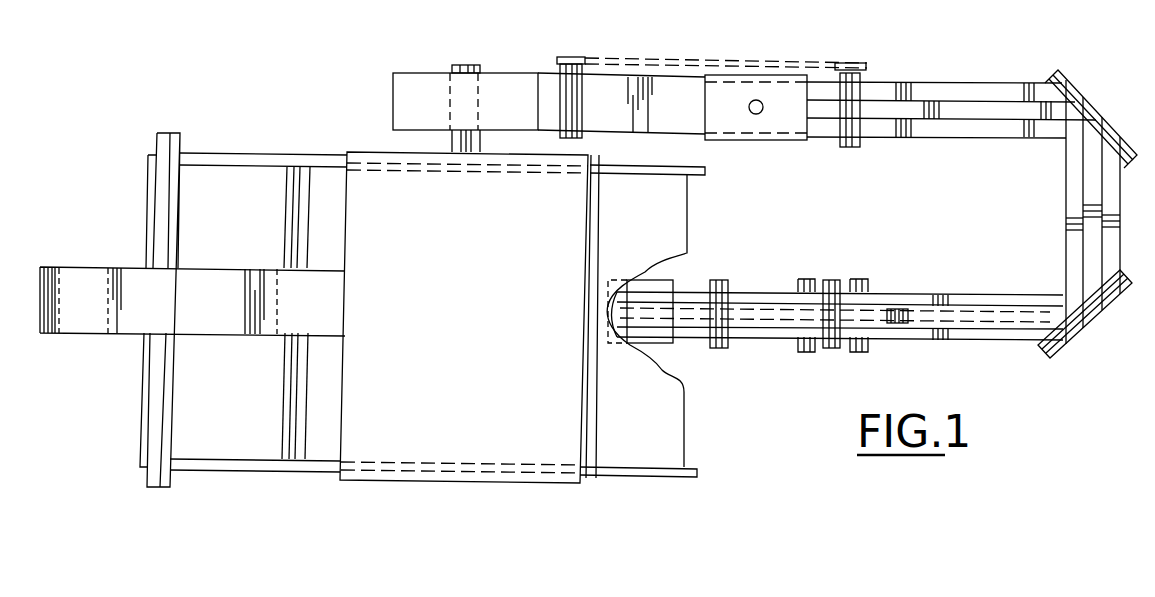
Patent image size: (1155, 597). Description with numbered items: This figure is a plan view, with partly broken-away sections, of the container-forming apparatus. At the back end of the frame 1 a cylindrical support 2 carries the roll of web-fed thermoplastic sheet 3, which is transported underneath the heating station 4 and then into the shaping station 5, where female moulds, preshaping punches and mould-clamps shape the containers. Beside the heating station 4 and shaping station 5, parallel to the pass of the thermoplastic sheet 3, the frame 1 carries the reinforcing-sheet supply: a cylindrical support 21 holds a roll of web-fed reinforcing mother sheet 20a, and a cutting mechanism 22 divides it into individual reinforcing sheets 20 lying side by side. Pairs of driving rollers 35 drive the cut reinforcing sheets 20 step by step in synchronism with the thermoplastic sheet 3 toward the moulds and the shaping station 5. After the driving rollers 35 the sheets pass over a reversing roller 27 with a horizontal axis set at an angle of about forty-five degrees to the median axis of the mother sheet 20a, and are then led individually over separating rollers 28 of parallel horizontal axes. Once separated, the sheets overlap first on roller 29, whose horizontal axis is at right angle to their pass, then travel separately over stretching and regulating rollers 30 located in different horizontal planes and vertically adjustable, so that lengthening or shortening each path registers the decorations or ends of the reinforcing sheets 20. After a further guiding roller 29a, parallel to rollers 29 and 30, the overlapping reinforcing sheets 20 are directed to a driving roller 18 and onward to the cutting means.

The frame 1 is at (325, 481).
The cylindrical support 2 is at (174, 133).
The thermoplastic sheet 3 is at (77, 283).
The heating station 4 is at (522, 317).
The shaping station 5 is at (690, 398).
The driving roller 18 is at (716, 282).
The reinforcing sheet 20 is at (915, 84).
The reinforcing mother sheet 20a is at (405, 77).
The cylindrical support 21 is at (467, 65).
The cutting mechanism 22 is at (750, 75).
The reversing roller 27 is at (1059, 71).
The separating rollers 28 is at (1062, 345).
The roller 29 is at (862, 279).
The guiding roller 29a is at (808, 279).
The stretching and regulating rollers 30 is at (835, 350).
The driving rollers 35 is at (577, 98).